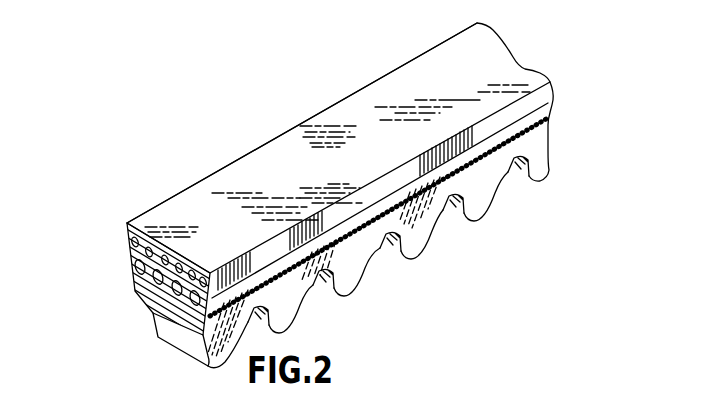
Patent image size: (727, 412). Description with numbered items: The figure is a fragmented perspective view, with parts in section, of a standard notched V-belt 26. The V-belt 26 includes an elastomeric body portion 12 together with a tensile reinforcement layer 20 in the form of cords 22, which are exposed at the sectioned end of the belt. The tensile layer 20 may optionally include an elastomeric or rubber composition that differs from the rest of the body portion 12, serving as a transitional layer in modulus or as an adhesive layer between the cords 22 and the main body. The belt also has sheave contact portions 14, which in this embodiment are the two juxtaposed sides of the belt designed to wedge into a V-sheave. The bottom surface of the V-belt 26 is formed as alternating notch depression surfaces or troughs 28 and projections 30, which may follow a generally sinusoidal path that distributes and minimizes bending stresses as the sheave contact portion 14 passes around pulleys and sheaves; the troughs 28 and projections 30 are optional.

The elastomeric body portion 12 is at (336, 160).
The sheave contact portion 14 is at (348, 282).
The tensile reinforcement layer 20 is at (122, 260).
The cords 22 is at (132, 273).
The V-belt 26 is at (226, 153).
The notch depression surfaces 28 is at (447, 208).
The projections 30 is at (482, 195).